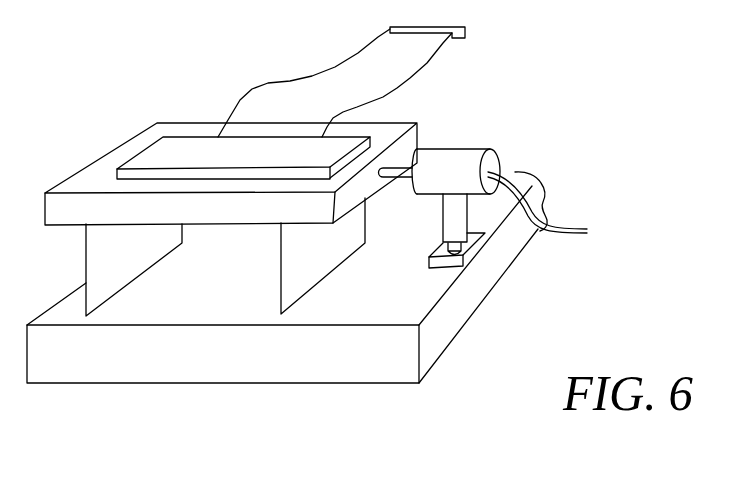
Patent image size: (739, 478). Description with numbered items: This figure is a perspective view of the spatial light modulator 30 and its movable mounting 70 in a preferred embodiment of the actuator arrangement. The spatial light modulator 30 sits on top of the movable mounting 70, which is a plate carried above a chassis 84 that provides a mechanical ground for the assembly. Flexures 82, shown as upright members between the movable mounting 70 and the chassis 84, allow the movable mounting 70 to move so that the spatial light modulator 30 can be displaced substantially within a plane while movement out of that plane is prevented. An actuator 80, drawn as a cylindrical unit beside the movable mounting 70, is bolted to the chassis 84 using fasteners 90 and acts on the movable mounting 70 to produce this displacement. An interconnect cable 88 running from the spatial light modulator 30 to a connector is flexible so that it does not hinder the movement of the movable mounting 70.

The spatial light modulator 30 is at (193, 137).
The movable mounting 70 is at (87, 167).
The actuator 80 is at (462, 149).
The flexures 82 is at (281, 258).
The chassis 84 is at (225, 362).
The interconnect cable 88 is at (298, 80).
The fasteners 90 is at (460, 258).